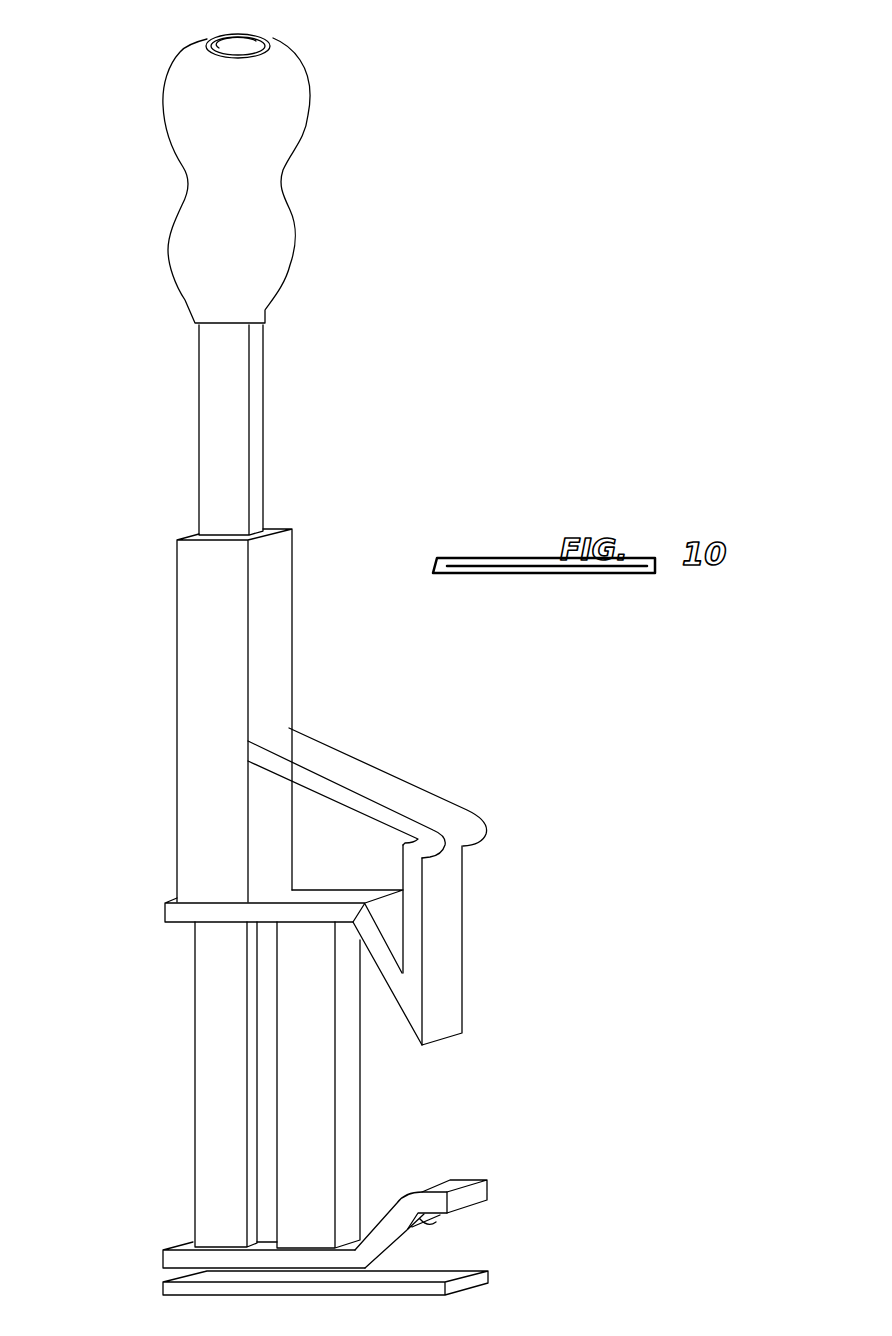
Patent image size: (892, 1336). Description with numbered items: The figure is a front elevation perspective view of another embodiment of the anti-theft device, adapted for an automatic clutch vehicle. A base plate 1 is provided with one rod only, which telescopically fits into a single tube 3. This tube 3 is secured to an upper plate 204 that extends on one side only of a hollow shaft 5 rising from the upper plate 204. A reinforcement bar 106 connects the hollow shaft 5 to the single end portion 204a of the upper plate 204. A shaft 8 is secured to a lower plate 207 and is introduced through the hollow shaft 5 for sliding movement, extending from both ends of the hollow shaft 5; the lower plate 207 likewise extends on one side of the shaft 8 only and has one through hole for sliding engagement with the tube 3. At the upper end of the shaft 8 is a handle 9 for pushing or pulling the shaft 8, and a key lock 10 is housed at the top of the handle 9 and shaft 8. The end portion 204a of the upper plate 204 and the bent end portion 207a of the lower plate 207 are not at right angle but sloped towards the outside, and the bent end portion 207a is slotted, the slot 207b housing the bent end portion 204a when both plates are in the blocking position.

The base plate 1 is at (453, 1277).
The tube 3 is at (350, 1097).
The hollow shaft 5 is at (277, 662).
The shaft 8 is at (256, 435).
The handle 9 is at (270, 160).
The key lock 10 is at (232, 44).
The reinforcement bar 106 is at (388, 785).
The upper plate 204 is at (330, 895).
The end portion of upper plate 204a is at (447, 948).
The lower plate 207 is at (177, 1259).
The bent end portion of lower plate 207a is at (477, 1193).
The slot 207b is at (427, 1220).